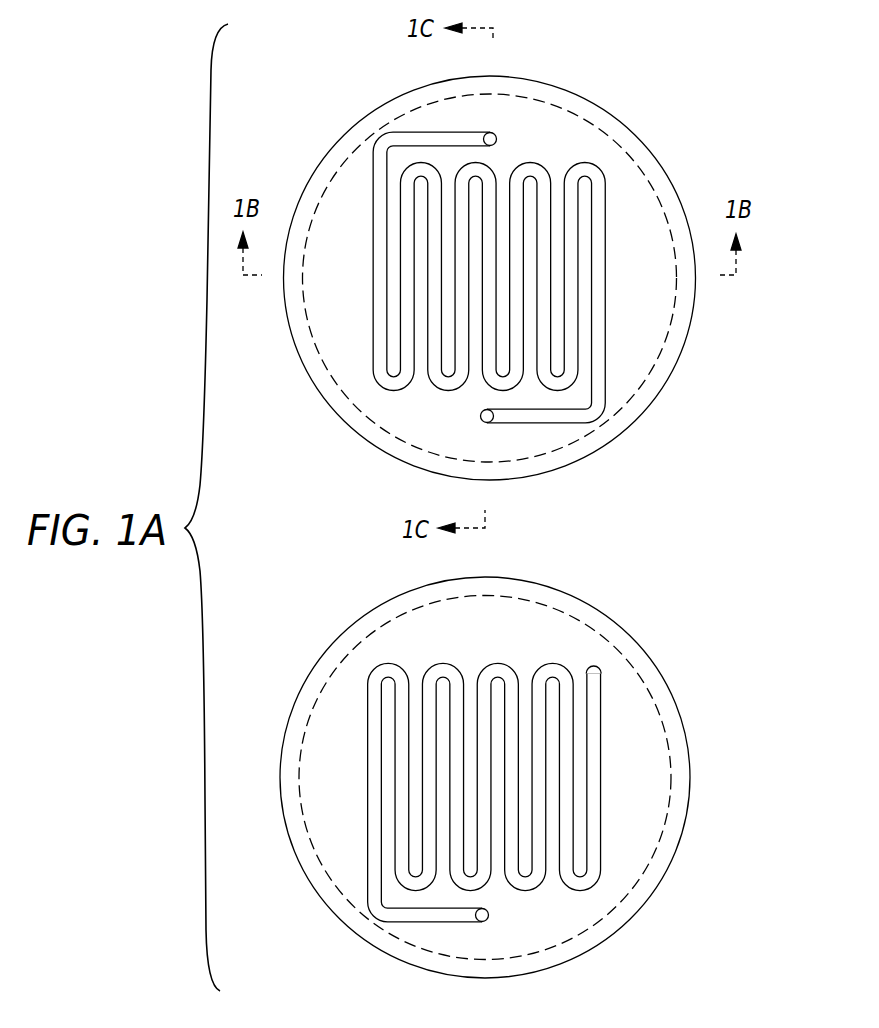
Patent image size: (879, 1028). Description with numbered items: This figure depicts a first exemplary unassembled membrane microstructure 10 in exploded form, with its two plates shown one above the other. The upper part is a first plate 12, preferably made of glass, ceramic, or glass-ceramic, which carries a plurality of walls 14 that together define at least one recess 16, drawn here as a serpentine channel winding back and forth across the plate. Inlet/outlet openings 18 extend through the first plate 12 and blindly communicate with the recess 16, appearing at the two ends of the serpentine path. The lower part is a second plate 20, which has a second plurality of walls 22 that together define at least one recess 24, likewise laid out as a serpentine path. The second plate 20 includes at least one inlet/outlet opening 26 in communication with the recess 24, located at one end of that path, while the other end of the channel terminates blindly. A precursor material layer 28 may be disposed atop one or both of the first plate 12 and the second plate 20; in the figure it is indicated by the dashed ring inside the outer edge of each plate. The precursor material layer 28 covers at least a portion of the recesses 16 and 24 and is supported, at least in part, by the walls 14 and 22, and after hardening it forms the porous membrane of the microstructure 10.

The membrane microstructure 10 is at (643, 545).
The first plate 12 is at (327, 173).
The walls 14 is at (585, 188).
The recess 16 is at (600, 200).
The inlet/outlet openings 18 is at (497, 137).
The second plate 20 is at (358, 632).
The second plurality of walls 22 is at (580, 695).
The recess 24 is at (592, 732).
The inlet/outlet opening 26 is at (488, 917).
The precursor material layer 28 is at (653, 365).